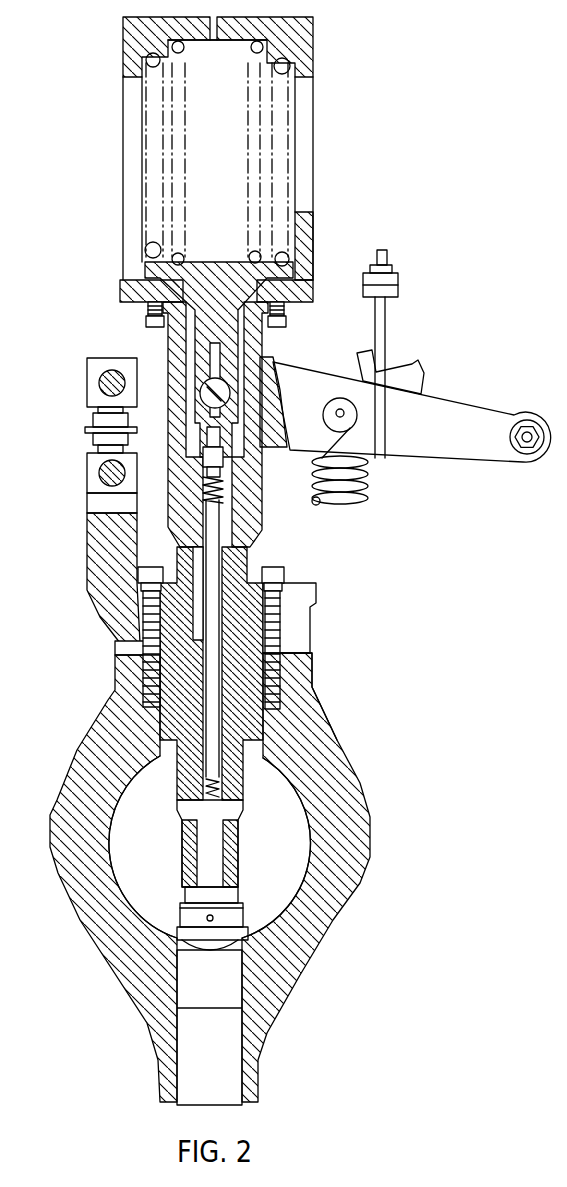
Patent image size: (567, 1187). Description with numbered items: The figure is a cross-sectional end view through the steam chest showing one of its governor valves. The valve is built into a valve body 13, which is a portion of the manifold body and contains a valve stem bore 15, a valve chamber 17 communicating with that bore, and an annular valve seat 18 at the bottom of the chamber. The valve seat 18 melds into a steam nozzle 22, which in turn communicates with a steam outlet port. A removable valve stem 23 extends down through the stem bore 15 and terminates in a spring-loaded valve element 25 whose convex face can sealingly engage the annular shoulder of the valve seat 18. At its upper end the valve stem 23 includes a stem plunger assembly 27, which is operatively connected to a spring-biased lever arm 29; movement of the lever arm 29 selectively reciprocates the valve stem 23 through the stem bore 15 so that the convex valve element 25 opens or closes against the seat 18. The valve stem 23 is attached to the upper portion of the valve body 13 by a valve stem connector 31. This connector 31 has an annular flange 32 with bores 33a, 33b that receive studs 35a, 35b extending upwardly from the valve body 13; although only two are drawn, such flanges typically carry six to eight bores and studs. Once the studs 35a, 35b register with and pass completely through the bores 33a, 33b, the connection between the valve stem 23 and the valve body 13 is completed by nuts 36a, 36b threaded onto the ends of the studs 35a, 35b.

The valve body 13 is at (73, 763).
The valve stem bore 15 is at (232, 745).
The valve chamber 17 is at (155, 838).
The annular valve seat 18 is at (177, 920).
The steam nozzle 22 is at (227, 990).
The valve stem 23 is at (183, 752).
The valve element 25 is at (217, 940).
The stem plunger assembly 27 is at (252, 507).
The lever arm 29 is at (455, 441).
The valve stem connector 31 is at (219, 622).
The annular flange 32 is at (298, 648).
The bore 33a is at (140, 644).
The bore 33b is at (280, 628).
The stud 35a is at (147, 613).
The stud 35b is at (280, 622).
The nut 36a is at (164, 572).
The nut 36b is at (285, 570).